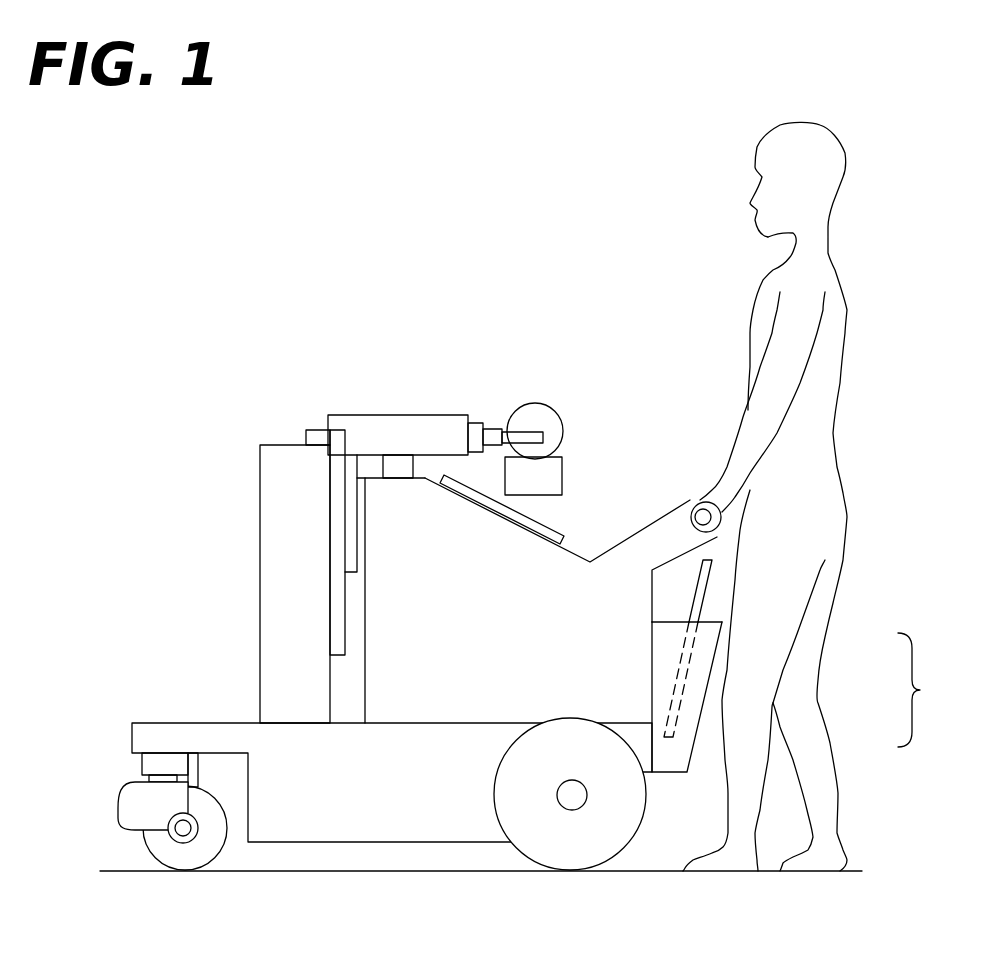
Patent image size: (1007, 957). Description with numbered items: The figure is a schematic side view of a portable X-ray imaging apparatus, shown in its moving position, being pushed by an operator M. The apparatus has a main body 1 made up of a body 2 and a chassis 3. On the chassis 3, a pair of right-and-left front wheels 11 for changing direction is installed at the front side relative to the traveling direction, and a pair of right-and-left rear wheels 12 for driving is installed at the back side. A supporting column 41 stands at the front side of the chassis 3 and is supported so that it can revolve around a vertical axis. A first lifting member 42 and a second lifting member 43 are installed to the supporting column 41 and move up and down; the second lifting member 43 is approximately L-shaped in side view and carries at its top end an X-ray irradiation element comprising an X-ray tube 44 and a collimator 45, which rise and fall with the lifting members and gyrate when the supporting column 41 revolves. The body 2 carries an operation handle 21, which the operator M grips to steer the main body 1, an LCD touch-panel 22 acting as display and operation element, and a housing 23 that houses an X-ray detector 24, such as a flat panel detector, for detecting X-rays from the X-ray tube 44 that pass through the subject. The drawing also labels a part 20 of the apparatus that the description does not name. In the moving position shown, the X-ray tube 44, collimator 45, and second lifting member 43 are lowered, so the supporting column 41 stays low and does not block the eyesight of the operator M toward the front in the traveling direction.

The main body 1 is at (919, 690).
The body 2 is at (620, 663).
The chassis 3 is at (620, 727).
The front wheels 11 is at (190, 847).
The rear wheels 12 is at (575, 838).
The carriage body 20 is at (420, 655).
The operation handle 21 is at (697, 502).
The LCD touch-panel 22 is at (553, 527).
The housing 23 is at (713, 613).
The X-ray detector 24 is at (717, 565).
The supporting column 41 is at (272, 540).
The first lifting member 42 is at (318, 430).
The second lifting member 43 is at (424, 432).
The X-ray tube 44 is at (534, 403).
The collimator 45 is at (545, 478).
The operator M is at (843, 333).